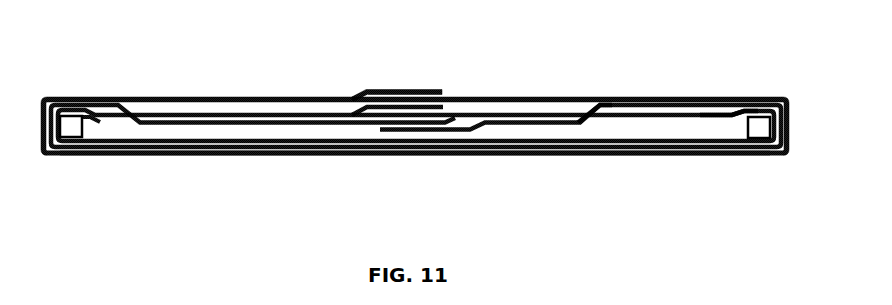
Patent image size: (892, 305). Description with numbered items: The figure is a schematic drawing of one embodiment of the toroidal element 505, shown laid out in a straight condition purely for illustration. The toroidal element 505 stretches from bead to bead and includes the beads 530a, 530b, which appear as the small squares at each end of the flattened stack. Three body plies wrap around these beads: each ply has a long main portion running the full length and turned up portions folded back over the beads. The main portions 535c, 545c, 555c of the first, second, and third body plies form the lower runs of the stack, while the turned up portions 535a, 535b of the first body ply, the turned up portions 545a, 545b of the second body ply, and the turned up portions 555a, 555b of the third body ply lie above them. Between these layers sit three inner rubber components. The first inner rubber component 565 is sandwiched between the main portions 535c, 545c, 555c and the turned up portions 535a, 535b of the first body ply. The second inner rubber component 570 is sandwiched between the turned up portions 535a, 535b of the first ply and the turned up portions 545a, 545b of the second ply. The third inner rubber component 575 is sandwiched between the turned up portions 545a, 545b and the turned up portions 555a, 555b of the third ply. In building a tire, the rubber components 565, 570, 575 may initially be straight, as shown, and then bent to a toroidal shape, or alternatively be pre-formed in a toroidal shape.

The toroidal element 505 is at (746, 66).
The bead 530a is at (758, 138).
The bead 530b is at (70, 130).
The turned up portion of the first body ply 535a is at (545, 114).
The turned up portion of the first body ply 535b is at (290, 114).
The main portion of the first body ply 535c is at (465, 157).
The turned up portion of the second body ply 545a is at (583, 98).
The turned up portion of the second body ply 545b is at (350, 100).
The main portion of the second body ply 545c is at (255, 157).
The turned up portion of the third body ply 555a is at (467, 98).
The turned up portion of the third body ply 555b is at (220, 98).
The main portion of the third body ply 555c is at (615, 157).
The first inner rubber component 565 is at (372, 133).
The second inner rubber component 570 is at (704, 112).
The third inner rubber component 575 is at (632, 106).